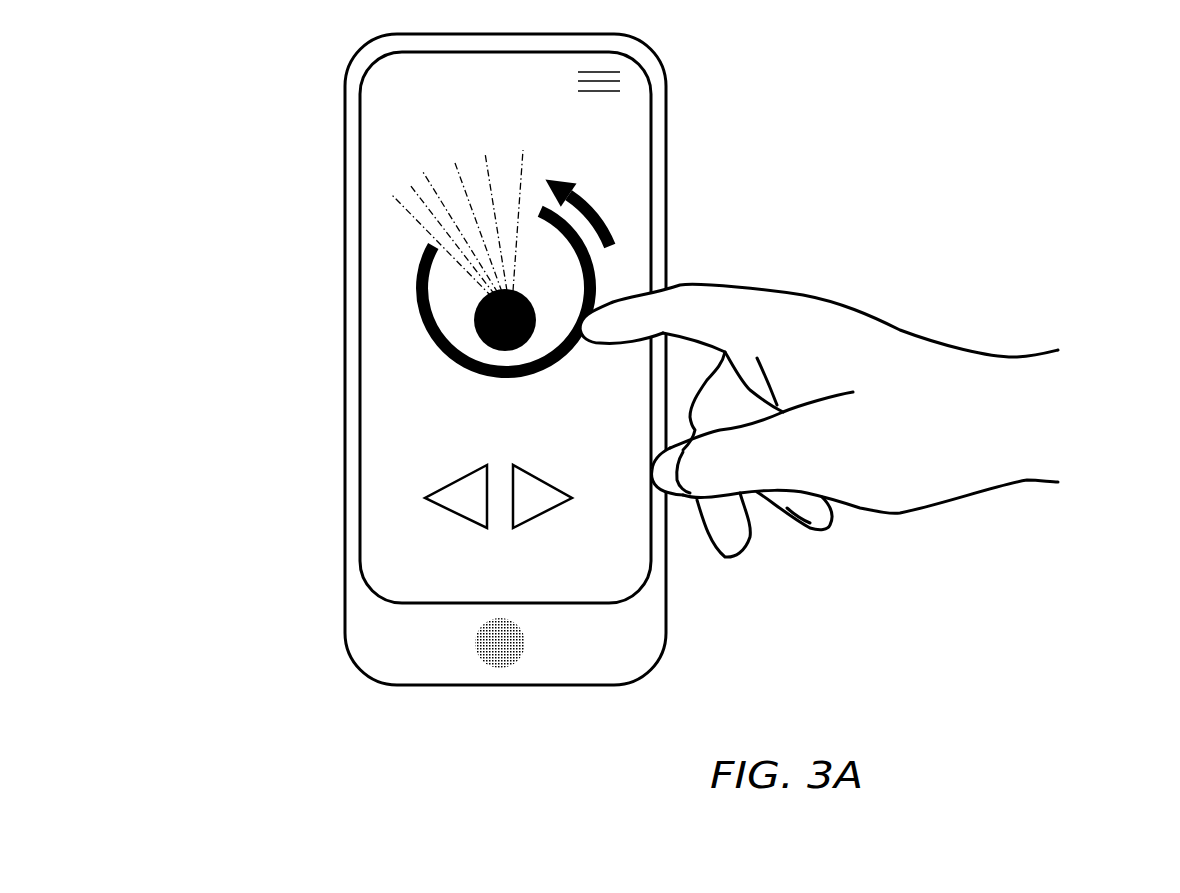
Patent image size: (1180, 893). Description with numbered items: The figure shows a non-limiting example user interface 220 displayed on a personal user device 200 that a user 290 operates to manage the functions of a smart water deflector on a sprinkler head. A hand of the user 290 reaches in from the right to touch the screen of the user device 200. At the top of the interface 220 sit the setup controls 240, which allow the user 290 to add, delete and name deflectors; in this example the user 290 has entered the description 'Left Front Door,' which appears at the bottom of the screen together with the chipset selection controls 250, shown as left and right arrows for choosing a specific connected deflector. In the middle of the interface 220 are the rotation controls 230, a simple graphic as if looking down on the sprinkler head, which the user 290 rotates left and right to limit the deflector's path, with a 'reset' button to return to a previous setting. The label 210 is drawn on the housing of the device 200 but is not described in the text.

The user device 200 is at (243, 110).
The mobile device housing 210 is at (347, 210).
The user interface 220 is at (377, 297).
The rotation controls 230 is at (617, 243).
The setup controls 240 is at (635, 85).
The chipset selection controls 250 is at (408, 497).
The user 290 is at (1075, 427).